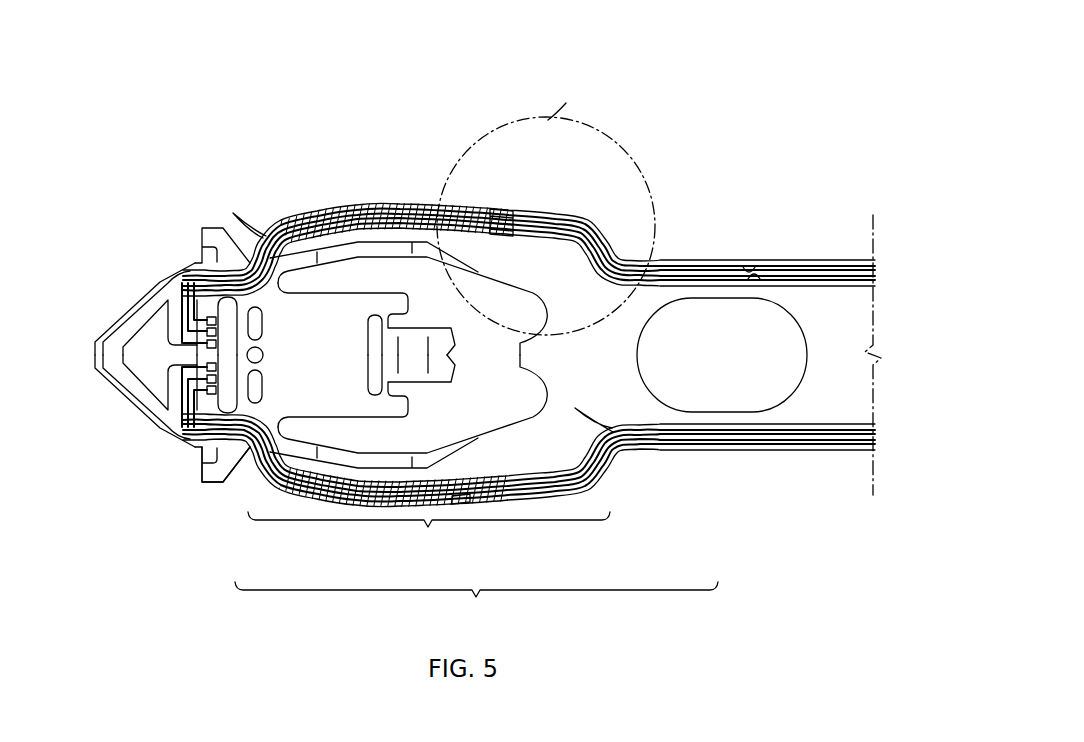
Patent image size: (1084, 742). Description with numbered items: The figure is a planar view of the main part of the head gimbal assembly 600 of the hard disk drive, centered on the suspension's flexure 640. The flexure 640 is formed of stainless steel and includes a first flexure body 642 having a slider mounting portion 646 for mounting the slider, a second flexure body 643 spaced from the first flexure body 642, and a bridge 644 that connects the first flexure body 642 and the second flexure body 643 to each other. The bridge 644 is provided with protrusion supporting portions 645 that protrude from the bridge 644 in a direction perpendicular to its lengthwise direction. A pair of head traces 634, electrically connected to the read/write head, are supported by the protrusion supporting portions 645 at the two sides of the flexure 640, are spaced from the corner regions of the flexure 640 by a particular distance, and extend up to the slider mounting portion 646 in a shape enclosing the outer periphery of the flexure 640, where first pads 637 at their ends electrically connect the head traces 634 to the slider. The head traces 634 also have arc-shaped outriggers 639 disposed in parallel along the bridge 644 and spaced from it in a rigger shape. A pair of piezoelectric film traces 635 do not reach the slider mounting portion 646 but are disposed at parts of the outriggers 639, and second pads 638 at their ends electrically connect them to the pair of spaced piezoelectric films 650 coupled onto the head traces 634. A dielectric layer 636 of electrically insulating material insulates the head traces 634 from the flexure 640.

The head gimbal assembly 600 is at (139, 116).
The head traces 634 is at (262, 232).
The piezoelectric film traces 635 is at (540, 216).
The dielectric layer 636 is at (583, 228).
The first pads 637 is at (190, 408).
The second pads 638 is at (490, 207).
The outriggers 639 is at (429, 531).
The flexure 640 is at (476, 599).
The first flexure body 642 is at (234, 452).
The second flexure body 643 is at (722, 414).
The bridge 644 is at (488, 457).
The protrusion supporting portions 645 is at (518, 213).
The slider mounting portion 646 is at (205, 318).
The piezoelectric films 650 is at (352, 210).